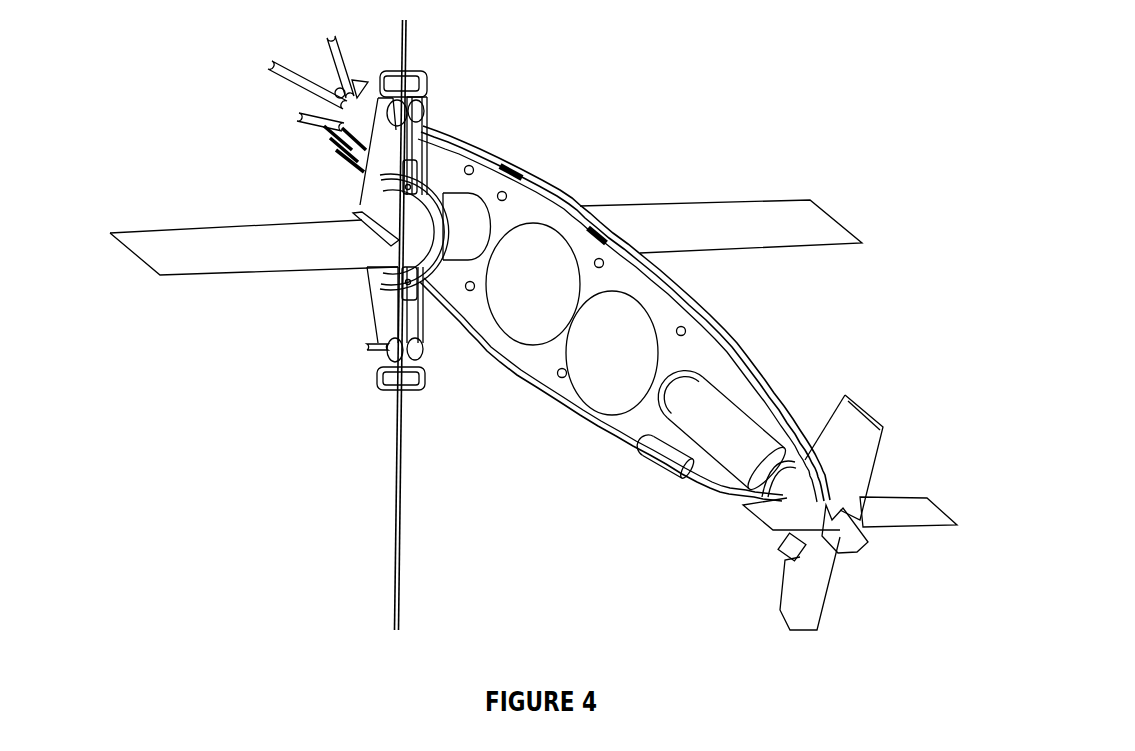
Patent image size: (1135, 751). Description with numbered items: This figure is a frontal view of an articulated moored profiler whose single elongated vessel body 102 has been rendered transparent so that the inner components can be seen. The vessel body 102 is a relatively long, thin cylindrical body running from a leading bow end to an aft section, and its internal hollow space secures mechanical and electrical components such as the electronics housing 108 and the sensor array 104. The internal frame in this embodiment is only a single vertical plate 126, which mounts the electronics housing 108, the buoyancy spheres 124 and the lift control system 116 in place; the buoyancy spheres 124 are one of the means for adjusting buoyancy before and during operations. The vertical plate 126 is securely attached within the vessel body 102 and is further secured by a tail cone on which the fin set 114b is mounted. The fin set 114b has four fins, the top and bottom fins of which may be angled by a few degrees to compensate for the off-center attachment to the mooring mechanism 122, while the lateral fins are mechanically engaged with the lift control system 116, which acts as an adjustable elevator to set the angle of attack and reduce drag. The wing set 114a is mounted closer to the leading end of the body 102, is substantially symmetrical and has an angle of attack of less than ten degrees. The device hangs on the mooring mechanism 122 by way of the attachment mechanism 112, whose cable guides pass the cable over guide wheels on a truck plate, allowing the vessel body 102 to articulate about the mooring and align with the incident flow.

The longitudinal vessel body 102 is at (785, 396).
The sensor array 104 is at (320, 133).
The electronics housing 108 is at (667, 472).
The attachment mechanism 112 is at (358, 317).
The wing set 114a is at (805, 208).
The fin set 114b is at (895, 510).
The lift control system 116 is at (718, 503).
The mooring mechanism 122 is at (392, 440).
The buoyancy spheres 124 is at (573, 390).
The vertical plate 126 is at (690, 343).